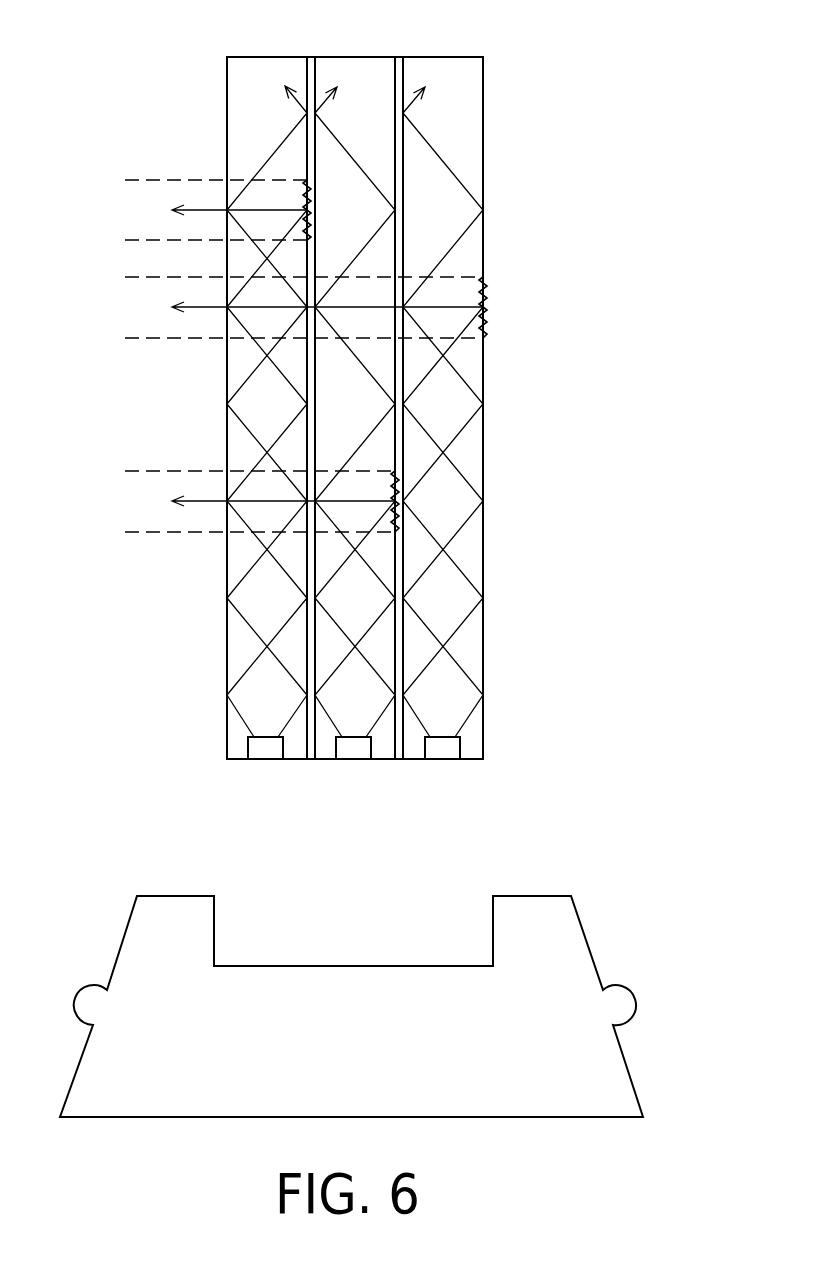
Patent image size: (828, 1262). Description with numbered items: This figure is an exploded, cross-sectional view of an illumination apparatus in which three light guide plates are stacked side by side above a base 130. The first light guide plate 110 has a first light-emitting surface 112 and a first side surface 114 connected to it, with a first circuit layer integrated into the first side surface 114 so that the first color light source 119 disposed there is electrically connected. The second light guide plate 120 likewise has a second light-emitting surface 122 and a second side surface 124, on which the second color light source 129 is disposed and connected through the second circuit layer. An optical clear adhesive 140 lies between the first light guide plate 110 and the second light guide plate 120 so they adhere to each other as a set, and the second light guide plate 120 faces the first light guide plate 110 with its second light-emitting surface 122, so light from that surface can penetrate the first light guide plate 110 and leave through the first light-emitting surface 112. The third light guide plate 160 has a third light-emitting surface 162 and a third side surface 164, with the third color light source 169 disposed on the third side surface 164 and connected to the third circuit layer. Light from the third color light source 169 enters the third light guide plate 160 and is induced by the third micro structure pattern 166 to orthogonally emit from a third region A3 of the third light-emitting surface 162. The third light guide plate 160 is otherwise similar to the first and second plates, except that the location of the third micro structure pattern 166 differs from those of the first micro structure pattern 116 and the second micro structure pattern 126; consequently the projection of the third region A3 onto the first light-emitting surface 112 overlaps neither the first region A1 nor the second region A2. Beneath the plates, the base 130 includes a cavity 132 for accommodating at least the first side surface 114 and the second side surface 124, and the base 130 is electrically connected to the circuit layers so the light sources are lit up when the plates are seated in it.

The first light guide plate 110 is at (246, 55).
The first light-emitting surface 112 is at (215, 725).
The first side surface 114 is at (222, 768).
The first micro structure pattern 116 is at (309, 187).
The first color light source 119 is at (267, 752).
The second light guide plate 120 is at (373, 55).
The second light-emitting surface 122 is at (329, 721).
The second side surface 124 is at (380, 773).
The second micro structure pattern 126 is at (397, 476).
The second color light source 129 is at (353, 752).
The base 130 is at (627, 1061).
The cavity 132 is at (328, 953).
The optical clear adhesive 140 is at (310, 55).
The third light guide plate 160 is at (463, 55).
The third light-emitting surface 162 is at (416, 638).
The third side surface 164 is at (471, 773).
The third micro structure pattern 166 is at (484, 301).
The third color light source 169 is at (445, 752).
The first region A1 is at (123, 180).
The second region A2 is at (123, 471).
The third region A3 is at (123, 277).